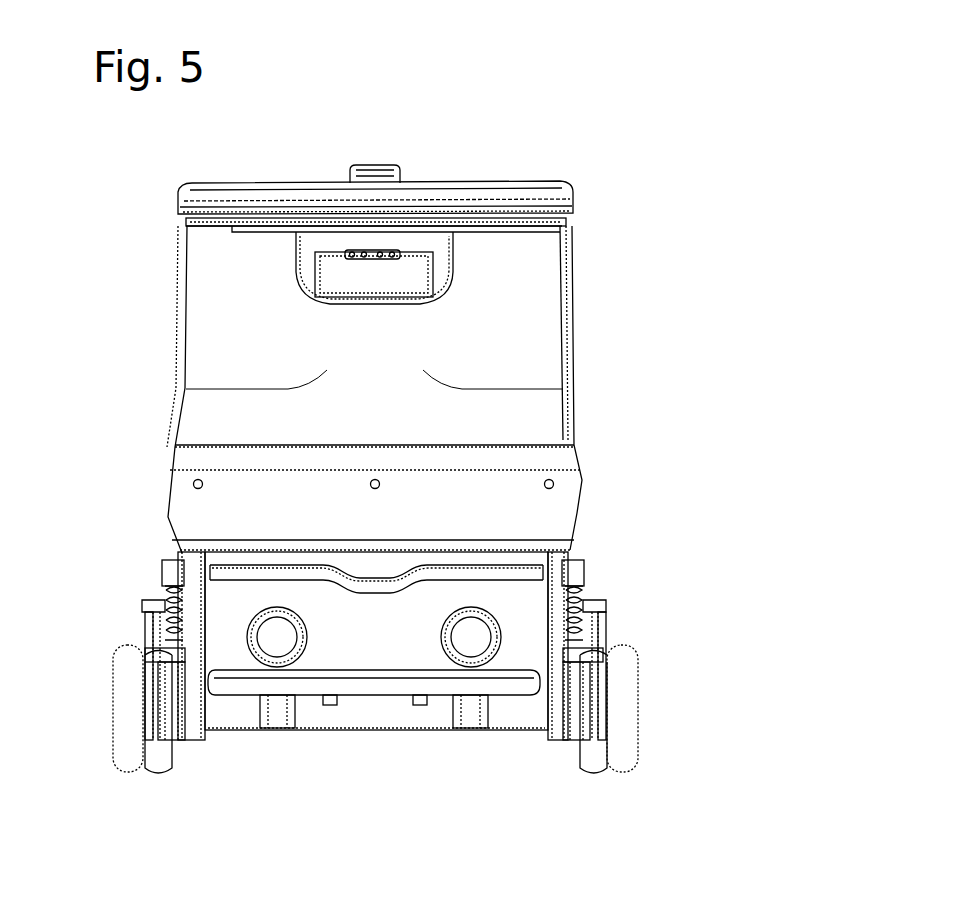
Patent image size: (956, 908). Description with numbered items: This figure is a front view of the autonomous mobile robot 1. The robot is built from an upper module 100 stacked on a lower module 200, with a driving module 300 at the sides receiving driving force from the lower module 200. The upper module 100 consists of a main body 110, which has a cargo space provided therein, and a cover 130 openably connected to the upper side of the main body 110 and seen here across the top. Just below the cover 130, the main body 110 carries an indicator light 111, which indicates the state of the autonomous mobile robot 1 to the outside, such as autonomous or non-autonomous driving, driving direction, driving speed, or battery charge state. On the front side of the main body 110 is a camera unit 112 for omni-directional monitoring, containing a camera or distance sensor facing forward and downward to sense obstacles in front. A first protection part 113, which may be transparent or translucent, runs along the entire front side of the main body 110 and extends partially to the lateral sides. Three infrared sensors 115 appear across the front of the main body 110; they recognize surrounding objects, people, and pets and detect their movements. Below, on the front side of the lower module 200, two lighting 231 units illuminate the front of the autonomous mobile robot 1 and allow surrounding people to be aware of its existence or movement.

The autonomous mobile robot 1 is at (600, 68).
The upper module 100 is at (612, 275).
The main body 110 is at (574, 360).
The indicator light 111 is at (262, 226).
The camera unit 112 is at (367, 258).
The first protection part 113 is at (222, 418).
The infrared sensor 115 is at (368, 490).
The cover 130 is at (470, 178).
The lower module 200 is at (368, 760).
The lighting 231 is at (277, 640).
The driving module 300 is at (663, 692).